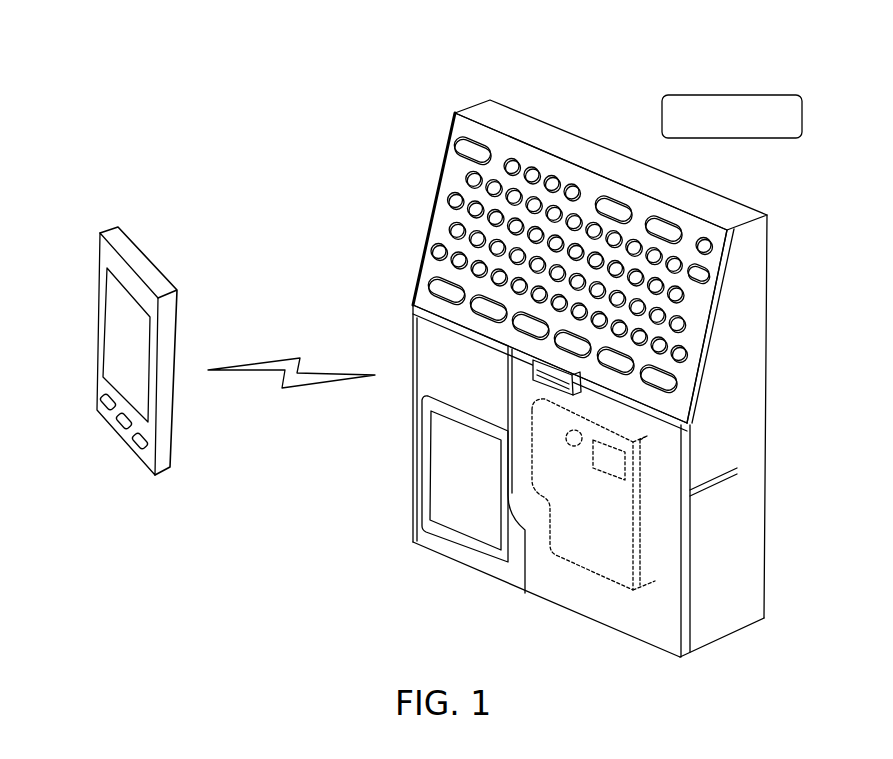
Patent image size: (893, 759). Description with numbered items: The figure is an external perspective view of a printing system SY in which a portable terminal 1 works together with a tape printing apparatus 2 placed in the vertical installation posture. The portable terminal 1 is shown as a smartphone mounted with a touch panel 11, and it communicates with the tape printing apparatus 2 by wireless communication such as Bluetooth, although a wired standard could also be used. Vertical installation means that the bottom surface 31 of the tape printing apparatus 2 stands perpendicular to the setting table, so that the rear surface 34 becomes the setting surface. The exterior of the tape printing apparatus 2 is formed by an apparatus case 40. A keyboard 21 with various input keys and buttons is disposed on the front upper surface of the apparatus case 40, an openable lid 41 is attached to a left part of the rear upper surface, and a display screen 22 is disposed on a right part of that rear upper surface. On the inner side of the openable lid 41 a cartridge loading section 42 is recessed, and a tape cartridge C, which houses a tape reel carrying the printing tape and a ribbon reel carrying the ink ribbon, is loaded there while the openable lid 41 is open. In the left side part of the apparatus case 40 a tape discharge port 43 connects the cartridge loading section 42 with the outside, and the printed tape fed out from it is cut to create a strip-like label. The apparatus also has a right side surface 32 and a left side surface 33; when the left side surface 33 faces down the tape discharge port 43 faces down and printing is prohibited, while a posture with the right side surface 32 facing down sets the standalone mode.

The printing system SY is at (540, 47).
The portable terminal 1 is at (167, 235).
The touch panel 11 is at (108, 322).
The tape printing apparatus 2 is at (757, 189).
The keyboard 21 is at (447, 218).
The display screen 22 is at (437, 500).
The bottom surface 31 is at (770, 252).
The right side surface 32 is at (413, 462).
The left side surface 33 is at (740, 590).
The rear surface 34 is at (498, 578).
The apparatus case 40 is at (768, 366).
The openable lid 41 is at (608, 625).
The cartridge loading section 42 is at (668, 541).
The tape discharge port 43 is at (722, 482).
The tape cartridge C is at (576, 585).